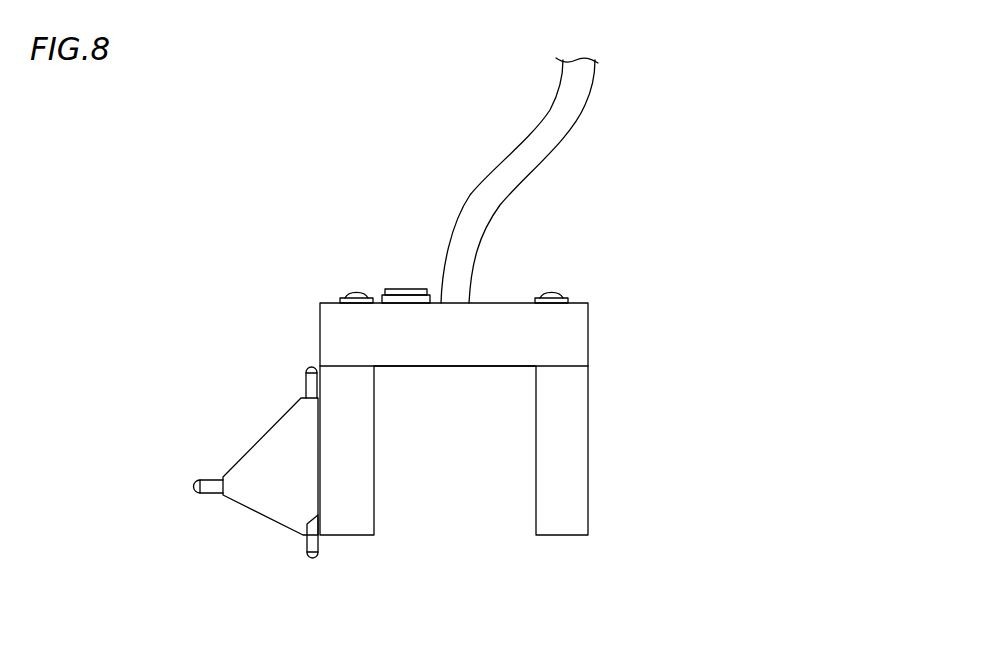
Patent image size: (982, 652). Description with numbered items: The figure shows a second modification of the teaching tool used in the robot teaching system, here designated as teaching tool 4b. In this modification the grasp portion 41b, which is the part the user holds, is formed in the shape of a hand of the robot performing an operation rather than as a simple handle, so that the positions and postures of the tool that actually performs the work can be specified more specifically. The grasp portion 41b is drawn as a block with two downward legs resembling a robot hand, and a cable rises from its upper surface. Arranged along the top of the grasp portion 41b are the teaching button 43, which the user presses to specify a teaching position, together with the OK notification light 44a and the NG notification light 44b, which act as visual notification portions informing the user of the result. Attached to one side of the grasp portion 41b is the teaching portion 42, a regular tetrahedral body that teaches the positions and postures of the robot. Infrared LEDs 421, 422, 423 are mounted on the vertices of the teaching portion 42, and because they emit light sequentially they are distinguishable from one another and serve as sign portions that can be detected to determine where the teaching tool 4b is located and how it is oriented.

The teaching tool 4b is at (494, 318).
The grasp portion 41b is at (432, 355).
The teaching portion 42 is at (262, 450).
The infrared LED 421 is at (192, 487).
The infrared LED 422 is at (312, 367).
The infrared LED 423 is at (307, 553).
The teaching button 43 is at (410, 289).
The OK notification light 44a is at (357, 290).
The NG notification light 44b is at (555, 290).